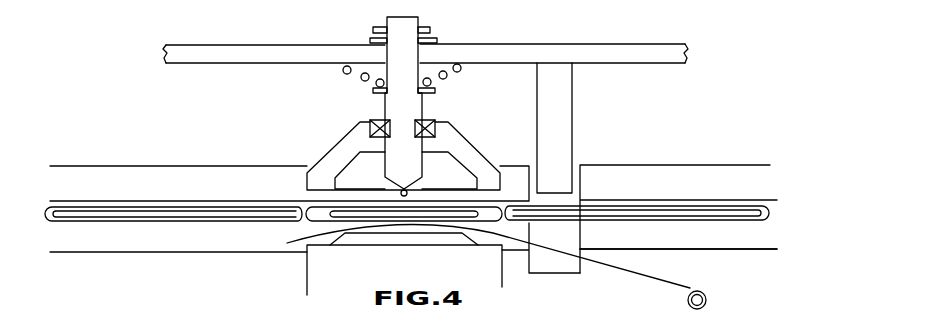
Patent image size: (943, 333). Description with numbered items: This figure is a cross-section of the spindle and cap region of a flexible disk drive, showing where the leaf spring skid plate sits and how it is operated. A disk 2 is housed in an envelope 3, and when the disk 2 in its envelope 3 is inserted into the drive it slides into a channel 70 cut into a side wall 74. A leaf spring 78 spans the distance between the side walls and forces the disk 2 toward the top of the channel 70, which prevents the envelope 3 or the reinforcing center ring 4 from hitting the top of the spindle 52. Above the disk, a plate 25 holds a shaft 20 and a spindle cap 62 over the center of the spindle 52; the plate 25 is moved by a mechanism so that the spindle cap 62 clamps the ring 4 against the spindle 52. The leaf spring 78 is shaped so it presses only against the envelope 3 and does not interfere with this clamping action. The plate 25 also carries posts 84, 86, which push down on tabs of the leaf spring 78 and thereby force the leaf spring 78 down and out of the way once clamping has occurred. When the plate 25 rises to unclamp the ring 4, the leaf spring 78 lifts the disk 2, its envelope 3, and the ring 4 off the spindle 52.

The plate 25 is at (578, 40).
The shaft 20 is at (428, 112).
The spindle cap 62 is at (338, 139).
The post 84 is at (603, 128).
The post 86 is at (578, 124).
The side wall 74 is at (692, 160).
The envelope 3 is at (134, 228).
The reinforcing center ring 4 is at (314, 204).
The disk 2 is at (705, 228).
The channel 70 is at (764, 233).
The spindle 52 is at (296, 282).
The leaf spring 78 is at (655, 286).